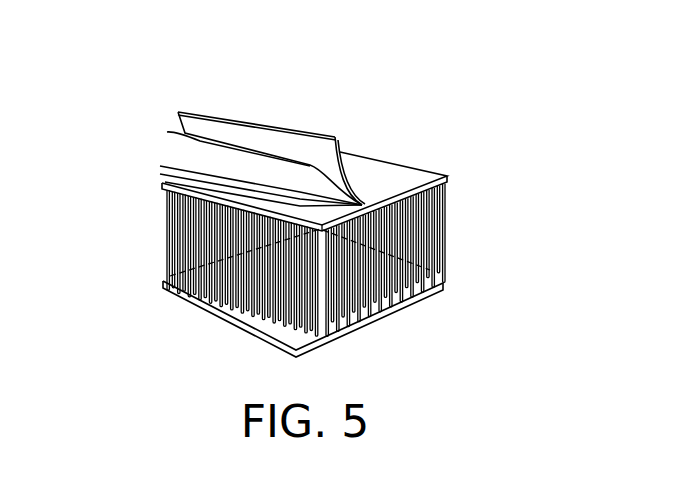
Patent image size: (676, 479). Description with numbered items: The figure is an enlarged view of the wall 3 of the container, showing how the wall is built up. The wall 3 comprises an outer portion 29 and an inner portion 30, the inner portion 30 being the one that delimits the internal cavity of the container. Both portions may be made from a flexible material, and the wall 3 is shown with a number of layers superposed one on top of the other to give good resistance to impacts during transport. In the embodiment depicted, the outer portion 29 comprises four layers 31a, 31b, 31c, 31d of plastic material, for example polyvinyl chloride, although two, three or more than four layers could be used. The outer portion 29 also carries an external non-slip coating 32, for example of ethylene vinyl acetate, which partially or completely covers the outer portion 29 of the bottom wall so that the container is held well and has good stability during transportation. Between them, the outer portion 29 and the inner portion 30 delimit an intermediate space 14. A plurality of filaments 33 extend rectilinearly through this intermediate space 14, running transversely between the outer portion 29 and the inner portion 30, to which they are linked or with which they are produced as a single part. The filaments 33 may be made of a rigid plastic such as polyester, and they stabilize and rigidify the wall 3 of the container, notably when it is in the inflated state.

The wall 3 is at (463, 123).
The intermediate space 14 is at (243, 288).
The outer portion 29 is at (410, 173).
The inner portion 30 is at (380, 323).
The first layer 31a is at (243, 158).
The second layer 31b is at (183, 167).
The third layer 31c is at (172, 178).
The fourth layer 31d is at (210, 193).
The external non-slip coating 32 is at (177, 121).
The filaments 33 is at (178, 248).